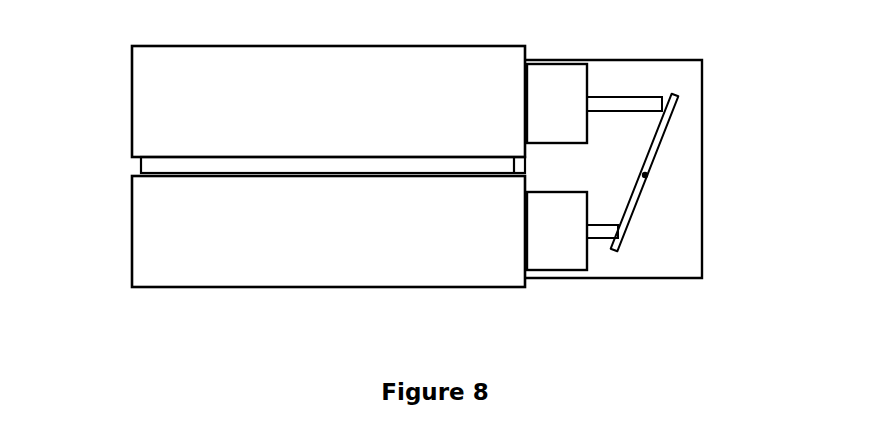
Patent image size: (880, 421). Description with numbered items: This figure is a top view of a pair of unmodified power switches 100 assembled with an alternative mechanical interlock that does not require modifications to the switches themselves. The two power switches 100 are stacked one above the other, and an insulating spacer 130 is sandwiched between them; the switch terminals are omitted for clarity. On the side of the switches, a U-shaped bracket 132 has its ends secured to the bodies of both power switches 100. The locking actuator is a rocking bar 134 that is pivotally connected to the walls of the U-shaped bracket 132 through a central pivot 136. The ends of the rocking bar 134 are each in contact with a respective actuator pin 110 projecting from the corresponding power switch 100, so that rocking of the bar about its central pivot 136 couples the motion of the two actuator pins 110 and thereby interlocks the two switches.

The power switch 100 is at (328, 166).
The actuator pin 110 is at (615, 96).
The insulating spacer 130 is at (142, 170).
The U-shaped bracket 132 is at (702, 173).
The rocking bar 134 is at (680, 100).
The pivot 136 is at (648, 176).